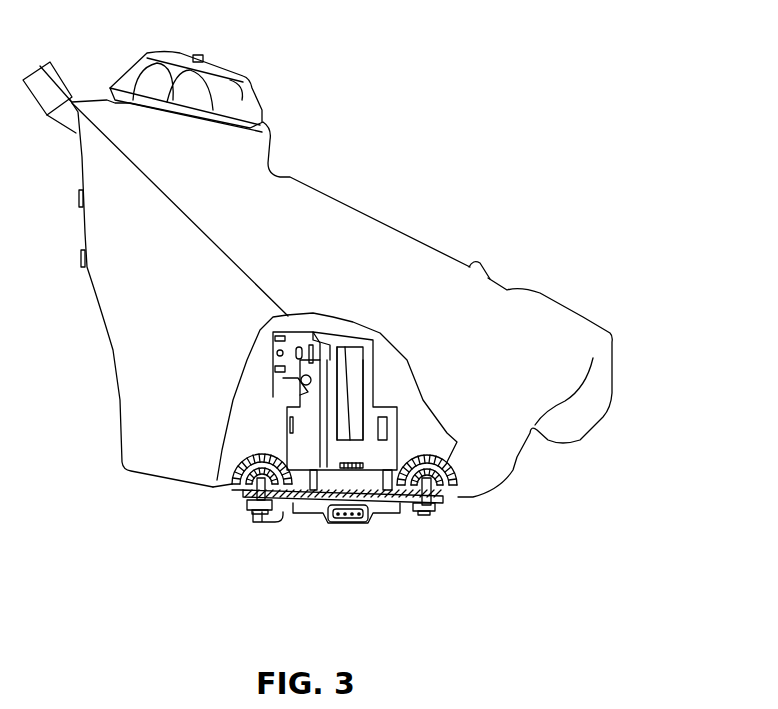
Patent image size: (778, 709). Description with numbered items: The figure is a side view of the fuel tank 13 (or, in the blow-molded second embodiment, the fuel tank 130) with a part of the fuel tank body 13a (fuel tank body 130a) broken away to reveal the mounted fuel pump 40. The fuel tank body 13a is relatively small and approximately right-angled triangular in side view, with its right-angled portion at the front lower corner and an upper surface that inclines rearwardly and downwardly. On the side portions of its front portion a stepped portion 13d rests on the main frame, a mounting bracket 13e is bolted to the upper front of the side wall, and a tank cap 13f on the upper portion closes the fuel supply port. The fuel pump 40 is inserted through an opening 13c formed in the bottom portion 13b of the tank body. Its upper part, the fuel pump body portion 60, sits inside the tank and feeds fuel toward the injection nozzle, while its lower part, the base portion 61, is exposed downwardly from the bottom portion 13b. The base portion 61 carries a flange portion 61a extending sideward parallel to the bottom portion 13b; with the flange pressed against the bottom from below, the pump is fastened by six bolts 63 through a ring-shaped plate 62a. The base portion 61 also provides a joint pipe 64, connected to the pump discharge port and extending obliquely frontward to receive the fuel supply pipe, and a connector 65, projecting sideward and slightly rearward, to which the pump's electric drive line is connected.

The fuel tank 13 is at (341, 298).
The fuel tank 130 is at (383, 203).
The fuel tank body 13a is at (112, 293).
The fuel tank body 130a is at (148, 350).
The bottom portion 13b is at (240, 490).
The opening 13c is at (297, 477).
The stepped portion 13d is at (240, 280).
The mounting bracket 13e is at (38, 62).
The tank cap 13f is at (258, 92).
The fuel pump 40 is at (333, 327).
The fuel pump body portion 60 is at (393, 410).
The base portion 61 is at (315, 515).
The flange portion 61a is at (447, 497).
The ring-shaped plate 62a is at (243, 500).
The bolts 63 is at (250, 510).
The joint pipe 64 is at (262, 523).
The connector 65 is at (333, 523).